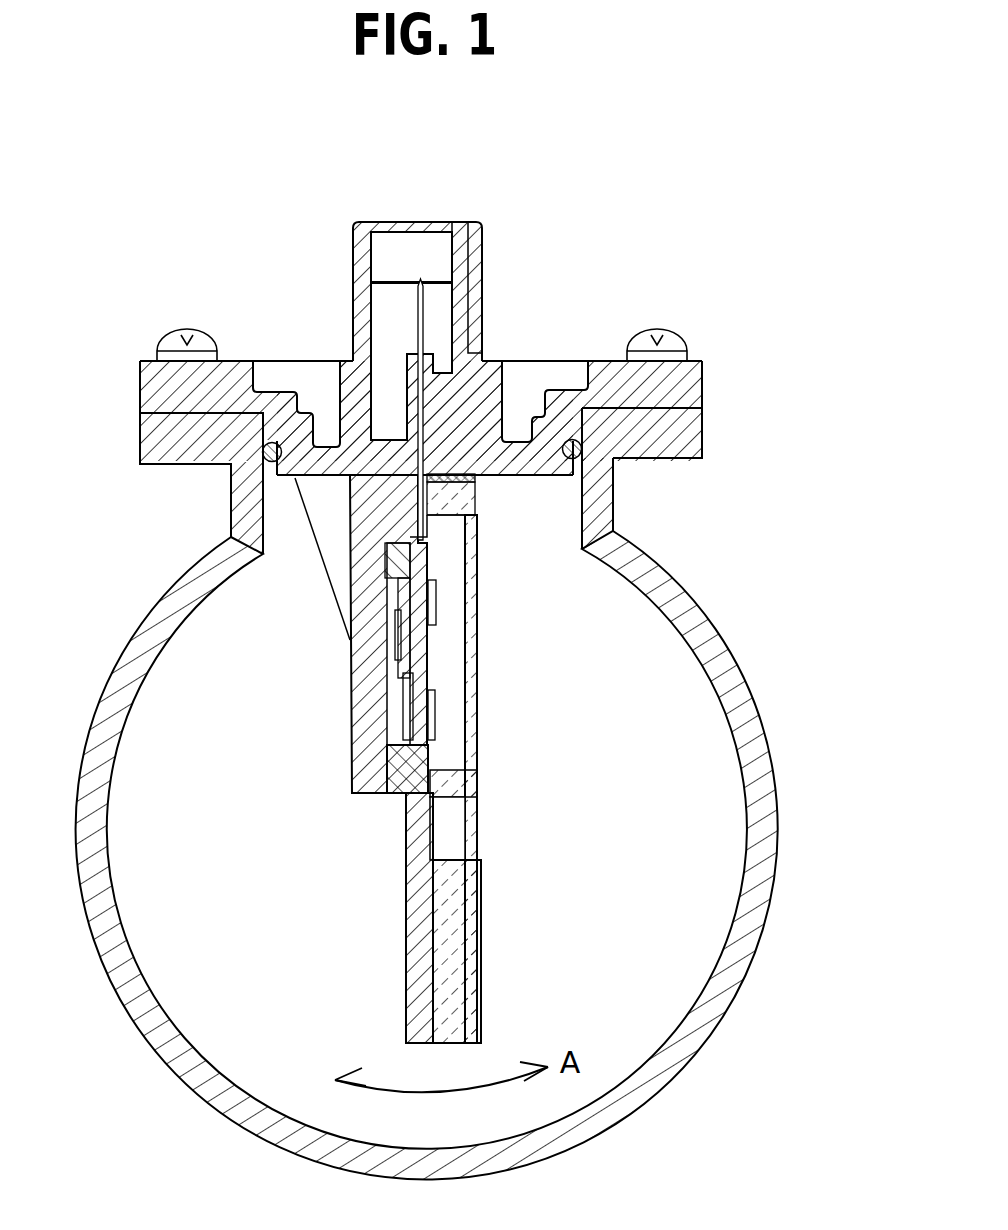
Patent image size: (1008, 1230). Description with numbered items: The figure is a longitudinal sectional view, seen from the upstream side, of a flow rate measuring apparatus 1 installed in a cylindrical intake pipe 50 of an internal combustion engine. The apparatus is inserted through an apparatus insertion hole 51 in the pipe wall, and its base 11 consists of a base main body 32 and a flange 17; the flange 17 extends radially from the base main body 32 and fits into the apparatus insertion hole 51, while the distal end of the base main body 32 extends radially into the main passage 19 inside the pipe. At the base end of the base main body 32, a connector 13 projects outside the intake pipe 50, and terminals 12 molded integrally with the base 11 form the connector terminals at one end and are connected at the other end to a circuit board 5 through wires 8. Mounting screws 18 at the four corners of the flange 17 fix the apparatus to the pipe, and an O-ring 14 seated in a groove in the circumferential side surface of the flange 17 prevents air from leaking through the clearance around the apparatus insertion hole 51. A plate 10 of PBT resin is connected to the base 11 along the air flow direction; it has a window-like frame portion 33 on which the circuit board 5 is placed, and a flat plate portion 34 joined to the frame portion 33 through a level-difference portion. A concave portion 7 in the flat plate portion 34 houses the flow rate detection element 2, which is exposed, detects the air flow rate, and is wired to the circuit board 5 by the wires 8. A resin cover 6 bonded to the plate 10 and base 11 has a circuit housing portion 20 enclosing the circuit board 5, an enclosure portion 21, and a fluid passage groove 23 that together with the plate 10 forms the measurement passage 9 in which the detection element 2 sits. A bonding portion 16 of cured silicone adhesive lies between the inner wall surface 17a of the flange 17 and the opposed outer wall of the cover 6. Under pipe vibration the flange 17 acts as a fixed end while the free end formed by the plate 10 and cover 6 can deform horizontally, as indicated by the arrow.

The flow rate measuring apparatus 1 is at (292, 787).
The flow rate detection element 2 is at (406, 830).
The circuit board 5 is at (437, 705).
The cover 6 is at (478, 690).
The concave portion 7 is at (433, 797).
The wires 8 is at (412, 585).
The measurement passage 9 is at (453, 842).
The plate 10 is at (407, 942).
The base 11 is at (345, 540).
The terminals 12 is at (422, 427).
The connector 13 is at (395, 262).
The O-ring 14 is at (232, 498).
The bonding portion 16 is at (470, 490).
The flange 17 is at (652, 390).
The inner wall surface 17a is at (477, 481).
The mounting screws 18 is at (205, 340).
The main passage 19 is at (717, 908).
The circuit housing portion 20 is at (398, 660).
The enclosure portion 21 is at (425, 538).
The fluid passage groove 23 is at (482, 877).
The base main body 32 is at (403, 690).
The frame portion 33 is at (403, 790).
The flat plate portion 34 is at (406, 920).
The intake pipe 50 is at (192, 1068).
The apparatus insertion hole 51 is at (280, 540).